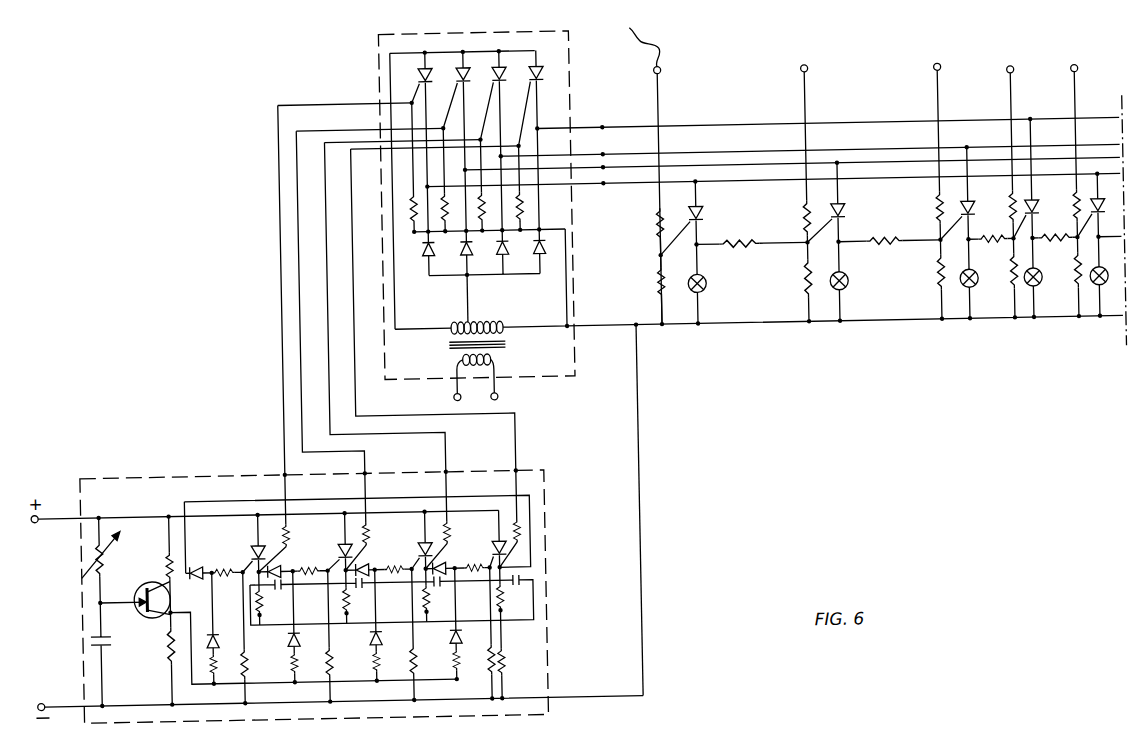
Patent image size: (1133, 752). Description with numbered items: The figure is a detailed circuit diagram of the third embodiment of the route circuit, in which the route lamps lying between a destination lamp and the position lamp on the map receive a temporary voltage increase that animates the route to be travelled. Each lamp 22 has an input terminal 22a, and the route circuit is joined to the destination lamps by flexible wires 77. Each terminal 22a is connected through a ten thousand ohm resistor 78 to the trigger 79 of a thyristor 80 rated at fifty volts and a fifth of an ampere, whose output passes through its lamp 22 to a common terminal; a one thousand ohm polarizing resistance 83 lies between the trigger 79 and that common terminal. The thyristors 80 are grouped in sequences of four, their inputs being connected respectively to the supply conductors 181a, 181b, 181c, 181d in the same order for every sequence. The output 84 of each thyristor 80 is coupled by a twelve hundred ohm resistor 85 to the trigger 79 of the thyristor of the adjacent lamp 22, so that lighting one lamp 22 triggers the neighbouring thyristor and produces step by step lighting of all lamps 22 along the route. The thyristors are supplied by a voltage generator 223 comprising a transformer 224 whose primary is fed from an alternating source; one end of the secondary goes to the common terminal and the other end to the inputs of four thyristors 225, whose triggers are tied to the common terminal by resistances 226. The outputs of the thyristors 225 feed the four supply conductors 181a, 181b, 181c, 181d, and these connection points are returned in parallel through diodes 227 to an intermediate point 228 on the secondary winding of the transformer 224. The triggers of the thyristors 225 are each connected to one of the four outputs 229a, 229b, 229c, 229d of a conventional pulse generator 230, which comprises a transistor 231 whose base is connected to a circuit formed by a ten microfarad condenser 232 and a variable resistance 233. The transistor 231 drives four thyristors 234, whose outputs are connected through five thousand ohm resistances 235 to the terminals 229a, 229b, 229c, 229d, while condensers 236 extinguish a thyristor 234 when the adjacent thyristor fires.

The lamp 22 is at (707, 292).
The input terminal 22a is at (666, 95).
The flexible wires 77 is at (646, 41).
The resistor 78 is at (660, 223).
The trigger 79 is at (661, 257).
The thyristor 80 is at (704, 219).
The polarizing resistance 83 is at (660, 291).
The output 84 is at (708, 246).
The resistor 85 is at (742, 252).
The supply conductor 181a is at (882, 183).
The supply conductor 181b is at (761, 167).
The supply conductor 181c is at (720, 155).
The supply conductor 181d is at (638, 127).
The voltage generator 223 is at (583, 347).
The transformer 224 is at (450, 349).
The thyristor 225 is at (431, 70).
The resistance 226 is at (417, 209).
The diode 227 is at (433, 258).
The intermediate point 228 is at (473, 320).
The output 229a is at (282, 469).
The output 229b is at (364, 469).
The output 229c is at (445, 469).
The output 229d is at (515, 469).
The pulse generator 230 is at (552, 604).
The transistor 231 is at (140, 611).
The condenser 232 is at (86, 636).
The variable resistance 233 is at (101, 545).
The thyristor 234 is at (251, 543).
The resistance 235 is at (285, 536).
The condenser 236 is at (257, 594).